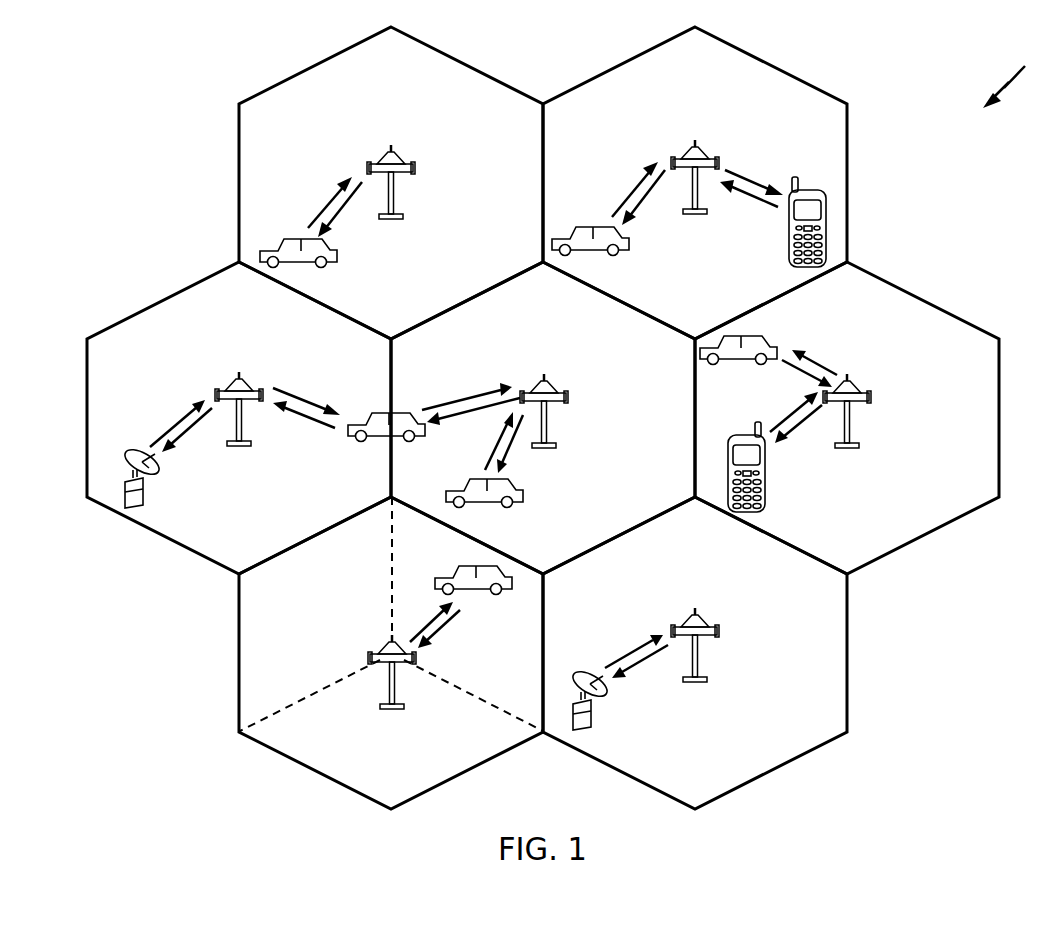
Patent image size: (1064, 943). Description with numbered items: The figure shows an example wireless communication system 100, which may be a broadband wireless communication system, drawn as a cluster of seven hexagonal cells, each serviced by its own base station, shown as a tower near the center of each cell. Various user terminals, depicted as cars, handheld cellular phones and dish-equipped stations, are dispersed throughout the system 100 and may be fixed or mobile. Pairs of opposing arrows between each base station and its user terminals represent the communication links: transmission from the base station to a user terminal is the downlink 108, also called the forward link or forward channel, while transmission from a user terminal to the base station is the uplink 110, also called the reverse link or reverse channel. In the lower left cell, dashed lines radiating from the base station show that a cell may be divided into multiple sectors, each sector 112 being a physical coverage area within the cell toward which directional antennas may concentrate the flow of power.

The wireless communication system 100 is at (1021, 78).
The downlink 108 is at (340, 213).
The uplink 110 is at (333, 193).
The sector 112 is at (445, 765).